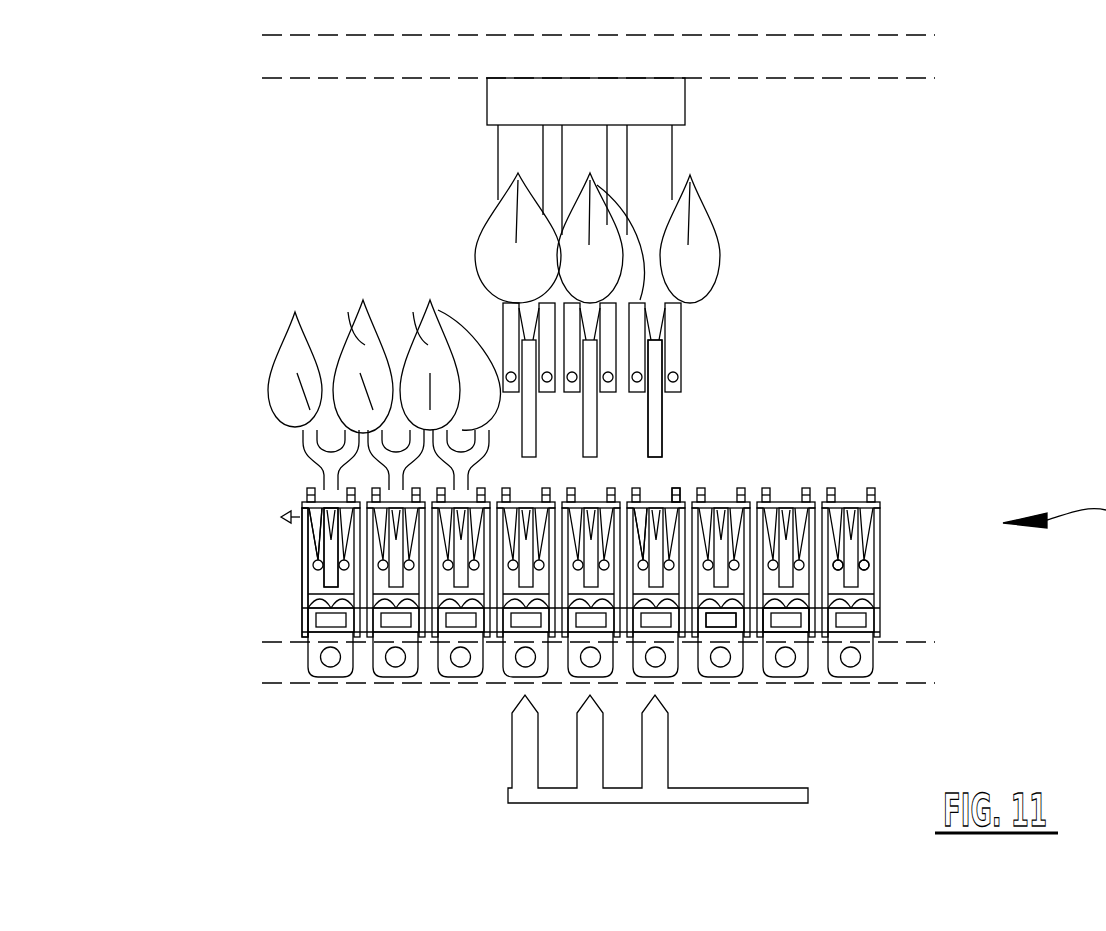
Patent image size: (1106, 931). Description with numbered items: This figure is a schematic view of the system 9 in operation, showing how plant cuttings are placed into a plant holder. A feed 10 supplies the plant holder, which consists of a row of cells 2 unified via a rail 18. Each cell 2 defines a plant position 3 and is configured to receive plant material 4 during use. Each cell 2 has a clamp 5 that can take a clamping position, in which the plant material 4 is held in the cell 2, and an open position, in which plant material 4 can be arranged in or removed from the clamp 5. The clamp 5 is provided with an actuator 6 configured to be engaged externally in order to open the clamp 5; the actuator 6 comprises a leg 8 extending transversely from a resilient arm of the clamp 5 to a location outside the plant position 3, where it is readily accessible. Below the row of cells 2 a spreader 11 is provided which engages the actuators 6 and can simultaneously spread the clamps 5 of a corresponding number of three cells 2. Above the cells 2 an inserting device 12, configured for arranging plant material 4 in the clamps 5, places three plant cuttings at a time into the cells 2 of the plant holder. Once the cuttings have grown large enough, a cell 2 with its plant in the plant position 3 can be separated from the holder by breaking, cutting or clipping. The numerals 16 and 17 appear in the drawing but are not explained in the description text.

The cell 2 is at (733, 485).
The plant position 3 is at (313, 473).
The plant material 4 is at (660, 422).
The clamp 5 is at (267, 565).
The actuator 6 is at (853, 565).
The leg 8 is at (838, 565).
The system 9 is at (993, 235).
The feed 10 is at (913, 668).
The spreader 11 is at (523, 763).
The inserting device 12 is at (662, 152).
The contact tab 16 is at (653, 517).
The latching tab 17 is at (680, 493).
The rail 18 is at (752, 623).